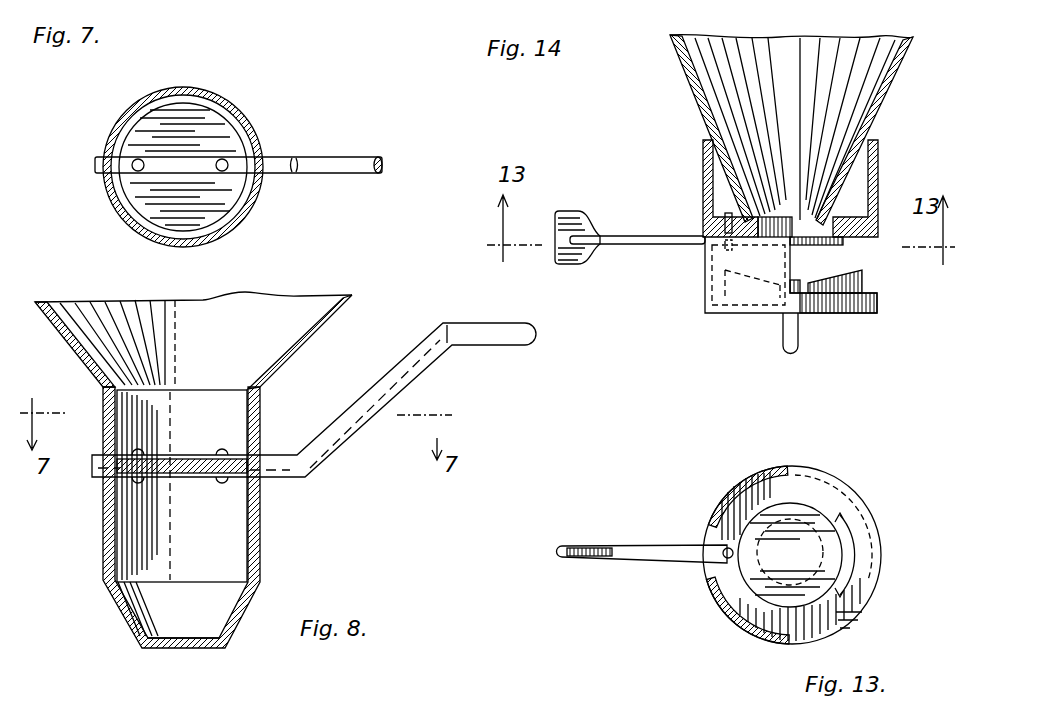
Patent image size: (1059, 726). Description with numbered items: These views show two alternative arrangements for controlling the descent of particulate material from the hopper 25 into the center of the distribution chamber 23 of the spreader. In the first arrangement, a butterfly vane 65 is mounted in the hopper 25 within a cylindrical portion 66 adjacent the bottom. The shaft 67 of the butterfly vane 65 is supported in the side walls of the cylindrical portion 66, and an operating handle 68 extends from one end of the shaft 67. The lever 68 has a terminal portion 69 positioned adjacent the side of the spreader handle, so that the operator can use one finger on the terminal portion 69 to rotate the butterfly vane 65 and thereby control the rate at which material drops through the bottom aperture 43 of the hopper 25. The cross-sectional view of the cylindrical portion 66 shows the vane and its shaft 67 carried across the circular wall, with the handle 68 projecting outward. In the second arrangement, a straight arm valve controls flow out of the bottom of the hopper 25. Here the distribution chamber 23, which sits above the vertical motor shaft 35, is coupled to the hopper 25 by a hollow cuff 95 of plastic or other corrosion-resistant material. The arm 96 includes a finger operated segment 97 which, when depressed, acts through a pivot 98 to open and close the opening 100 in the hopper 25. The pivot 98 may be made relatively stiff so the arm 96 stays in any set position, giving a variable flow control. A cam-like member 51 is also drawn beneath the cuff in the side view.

In FIG. 14, the distribution chamber 23 is at (703, 270).
In FIG. 13, the distribution chamber 23 is at (743, 475).
In FIG. 8, the hopper 25 is at (330, 331).
In FIG. 14, the hopper 25 is at (890, 102).
In FIG. 14, the shaft 35 is at (797, 345).
In FIG. 8, the bottom aperture 43 is at (205, 642).
In FIG. 14, the cam member 51 is at (857, 278).
In FIG. 7, the butterfly vane 65 is at (210, 215).
In FIG. 8, the butterfly vane 65 is at (203, 478).
In FIG. 7, the cylindrical portion 66 is at (237, 107).
In FIG. 8, the cylindrical portion 66 is at (253, 553).
In FIG. 7, the shaft 67 is at (95, 159).
In FIG. 8, the shaft 67 is at (92, 462).
In FIG. 7, the operating handle 68 is at (342, 155).
In FIG. 8, the operating handle 68 is at (380, 393).
In FIG. 8, the terminal portion 69 is at (522, 345).
In FIG. 14, the hollow cuff 95 is at (880, 172).
In FIG. 14, the arm 96 is at (632, 238).
In FIG. 13, the arm 96 is at (652, 545).
In FIG. 14, the finger operated segment 97 is at (568, 212).
In FIG. 13, the finger operated segment 97 is at (556, 553).
In FIG. 14, the pivot 98 is at (725, 212).
In FIG. 13, the pivot 98 is at (728, 563).
In FIG. 14, the opening 100 is at (805, 227).
In FIG. 13, the opening 100 is at (817, 522).